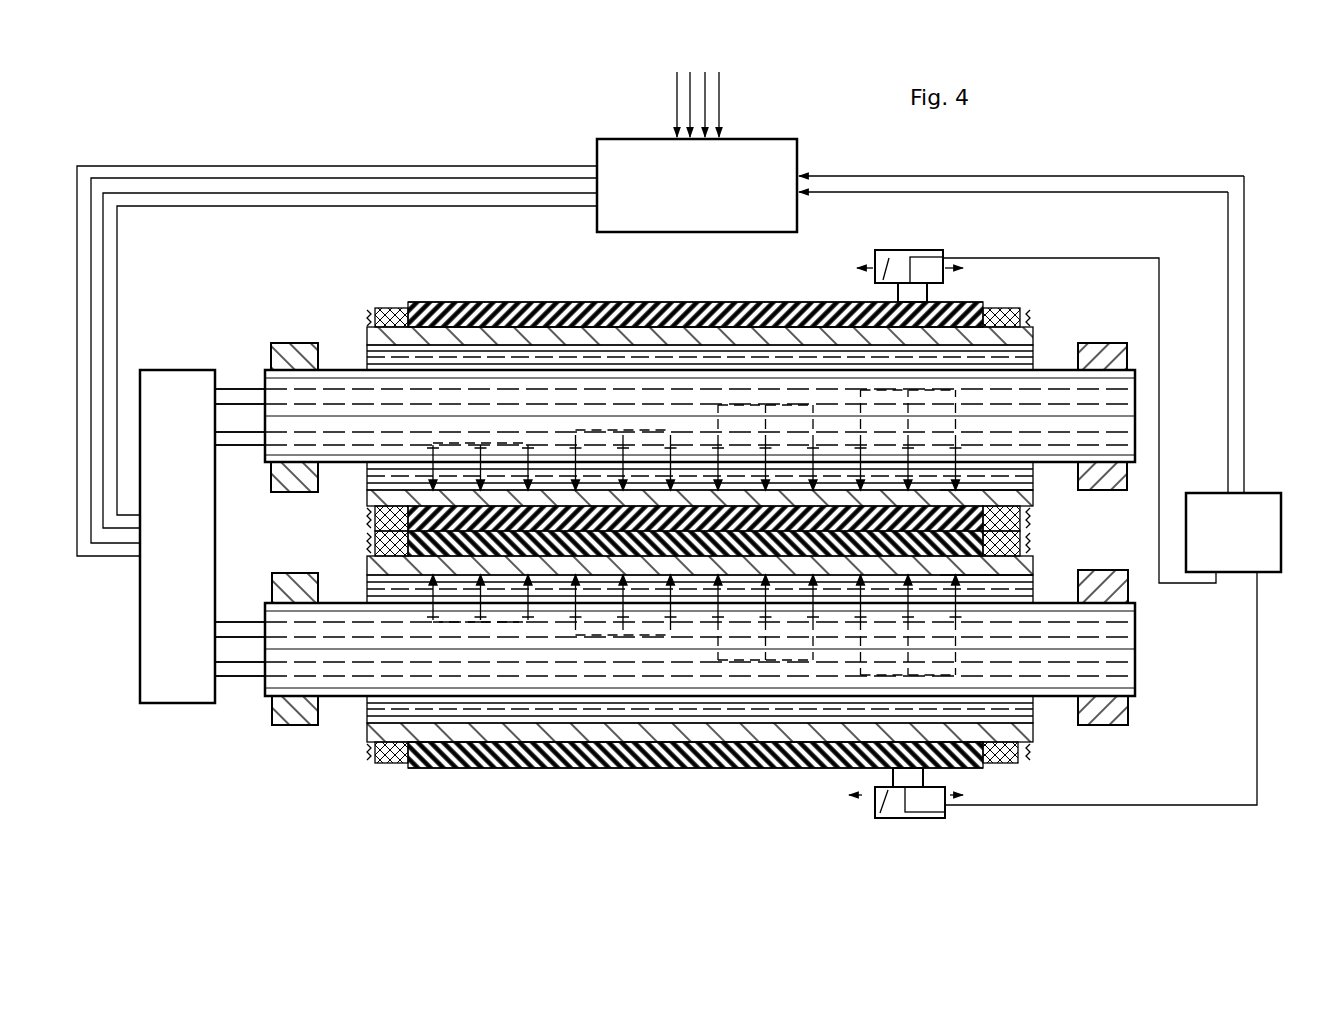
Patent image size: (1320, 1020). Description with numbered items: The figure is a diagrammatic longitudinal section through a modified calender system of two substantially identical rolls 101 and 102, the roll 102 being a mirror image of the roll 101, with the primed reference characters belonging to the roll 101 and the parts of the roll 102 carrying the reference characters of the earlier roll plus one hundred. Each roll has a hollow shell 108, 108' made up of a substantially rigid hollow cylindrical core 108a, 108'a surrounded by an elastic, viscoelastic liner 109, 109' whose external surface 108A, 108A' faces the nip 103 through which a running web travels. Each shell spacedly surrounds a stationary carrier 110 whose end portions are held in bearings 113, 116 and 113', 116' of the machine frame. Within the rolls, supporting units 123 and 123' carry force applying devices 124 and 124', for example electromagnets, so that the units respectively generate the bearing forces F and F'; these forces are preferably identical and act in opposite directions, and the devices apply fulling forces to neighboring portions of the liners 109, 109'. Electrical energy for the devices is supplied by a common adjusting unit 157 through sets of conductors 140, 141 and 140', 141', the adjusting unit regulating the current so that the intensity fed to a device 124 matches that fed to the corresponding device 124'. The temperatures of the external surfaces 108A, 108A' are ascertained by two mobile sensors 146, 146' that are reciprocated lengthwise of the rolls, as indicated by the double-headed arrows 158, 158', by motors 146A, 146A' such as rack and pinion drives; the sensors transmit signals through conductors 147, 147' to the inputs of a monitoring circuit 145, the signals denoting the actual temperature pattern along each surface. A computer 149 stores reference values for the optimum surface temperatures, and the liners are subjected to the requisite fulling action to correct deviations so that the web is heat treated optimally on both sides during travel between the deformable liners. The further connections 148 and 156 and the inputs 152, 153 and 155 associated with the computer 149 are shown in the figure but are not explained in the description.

The roll 101 is at (422, 280).
The roll 102 is at (333, 747).
The nip 103 is at (375, 521).
The shell 108 is at (687, 675).
The shell 108' is at (695, 392).
The hollow cylindrical core 108a is at (586, 745).
The hollow cylindrical core 108'a is at (695, 297).
The external surface 108A is at (695, 796).
The external surface 108A' is at (695, 280).
The liner 109 is at (700, 686).
The liner 109' is at (700, 379).
The carrier 110 is at (340, 380).
The bearing 113 is at (288, 673).
The bearing 113' is at (294, 392).
The bearing 116 is at (1106, 663).
The bearing 116' is at (1109, 392).
The supporting unit 123 is at (694, 712).
The supporting unit 123' is at (694, 358).
The force applying device 124 is at (694, 614).
The force applying device 124' is at (694, 451).
The conductor 140 is at (237, 681).
The conductor 141 is at (240, 649).
The conductor 140' is at (239, 384).
The conductor 141' is at (240, 417).
The monitoring circuit 145 is at (1218, 508).
The mobile sensor 146 is at (952, 782).
The mobile sensor 146' is at (960, 286).
The motor 146A is at (938, 811).
The motor 146A' is at (930, 249).
The conductor 147 is at (1101, 688).
The conductor 147' is at (1079, 404).
The signal line to controller 148 is at (1240, 247).
The computer 149 is at (770, 157).
The input signal 152 is at (677, 84).
The input signal 153 is at (690, 100).
The input signal 155 is at (705, 103).
The control lines to drive unit 156 is at (119, 262).
The adjusting unit 157 is at (167, 703).
The double-headed arrow 158 is at (853, 811).
The double-headed arrow 158' is at (896, 250).
The bearing force F is at (1004, 575).
The bearing force F' is at (1003, 487).